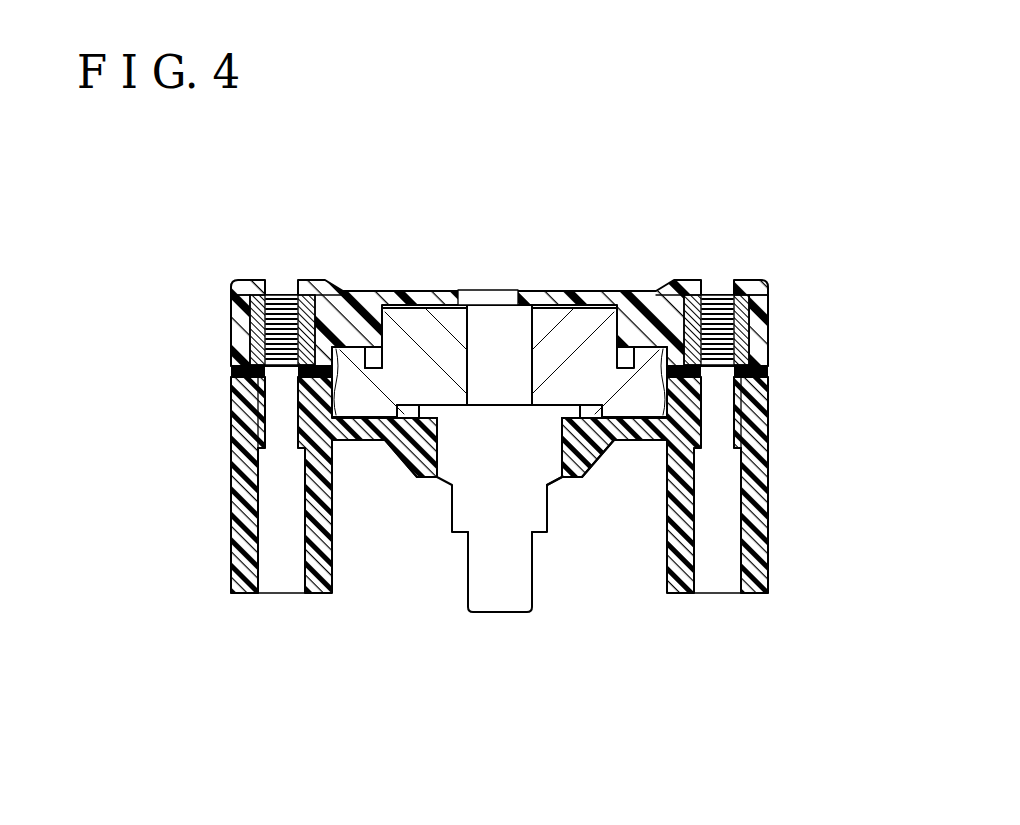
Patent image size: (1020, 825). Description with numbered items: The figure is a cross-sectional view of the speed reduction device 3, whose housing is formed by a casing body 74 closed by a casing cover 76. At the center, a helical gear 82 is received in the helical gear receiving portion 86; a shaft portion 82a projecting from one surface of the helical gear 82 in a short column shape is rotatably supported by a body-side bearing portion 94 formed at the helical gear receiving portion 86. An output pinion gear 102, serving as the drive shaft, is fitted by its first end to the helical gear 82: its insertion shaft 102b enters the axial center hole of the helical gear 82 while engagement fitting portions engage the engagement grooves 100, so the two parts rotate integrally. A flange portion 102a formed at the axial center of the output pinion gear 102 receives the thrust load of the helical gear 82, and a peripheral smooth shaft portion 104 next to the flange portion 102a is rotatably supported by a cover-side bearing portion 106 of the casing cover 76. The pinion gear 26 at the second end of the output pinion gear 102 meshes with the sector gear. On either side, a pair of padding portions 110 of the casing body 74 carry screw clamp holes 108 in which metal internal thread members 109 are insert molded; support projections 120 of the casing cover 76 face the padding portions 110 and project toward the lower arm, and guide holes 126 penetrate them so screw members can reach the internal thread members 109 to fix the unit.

The speed reduction device 3 is at (268, 196).
The pinion gear 26 is at (512, 506).
The casing body 74 is at (680, 406).
The casing cover 76 is at (334, 518).
The helical gear 82 is at (396, 333).
The shaft portion 82a is at (362, 300).
The helical gear receiving portion 86 is at (655, 372).
The body-side bearing portion 94 is at (588, 330).
The engagement grooves 100 is at (608, 449).
The output pinion gear 102 is at (499, 476).
The flange portion 102a is at (568, 404).
The insertion shaft 102b is at (482, 337).
The peripheral smooth shaft portion 104 is at (577, 478).
The cover-side bearing portion 106 is at (417, 467).
The screw clamp holes 108 is at (283, 282).
The internal thread members 109 is at (250, 305).
The padding portions 110 is at (232, 323).
The support projections 120 is at (236, 551).
The guide holes 126 is at (305, 554).